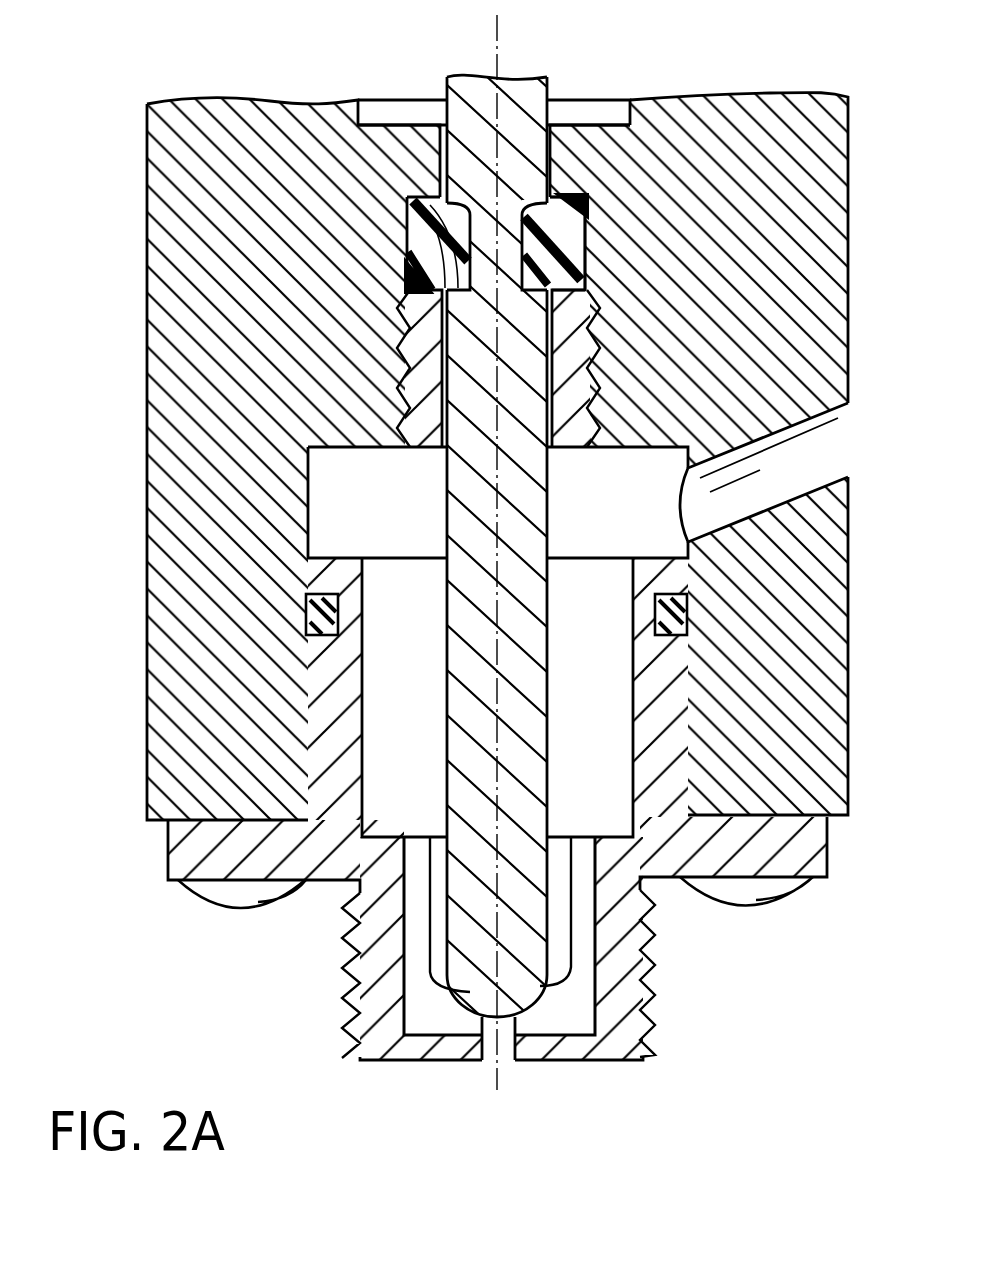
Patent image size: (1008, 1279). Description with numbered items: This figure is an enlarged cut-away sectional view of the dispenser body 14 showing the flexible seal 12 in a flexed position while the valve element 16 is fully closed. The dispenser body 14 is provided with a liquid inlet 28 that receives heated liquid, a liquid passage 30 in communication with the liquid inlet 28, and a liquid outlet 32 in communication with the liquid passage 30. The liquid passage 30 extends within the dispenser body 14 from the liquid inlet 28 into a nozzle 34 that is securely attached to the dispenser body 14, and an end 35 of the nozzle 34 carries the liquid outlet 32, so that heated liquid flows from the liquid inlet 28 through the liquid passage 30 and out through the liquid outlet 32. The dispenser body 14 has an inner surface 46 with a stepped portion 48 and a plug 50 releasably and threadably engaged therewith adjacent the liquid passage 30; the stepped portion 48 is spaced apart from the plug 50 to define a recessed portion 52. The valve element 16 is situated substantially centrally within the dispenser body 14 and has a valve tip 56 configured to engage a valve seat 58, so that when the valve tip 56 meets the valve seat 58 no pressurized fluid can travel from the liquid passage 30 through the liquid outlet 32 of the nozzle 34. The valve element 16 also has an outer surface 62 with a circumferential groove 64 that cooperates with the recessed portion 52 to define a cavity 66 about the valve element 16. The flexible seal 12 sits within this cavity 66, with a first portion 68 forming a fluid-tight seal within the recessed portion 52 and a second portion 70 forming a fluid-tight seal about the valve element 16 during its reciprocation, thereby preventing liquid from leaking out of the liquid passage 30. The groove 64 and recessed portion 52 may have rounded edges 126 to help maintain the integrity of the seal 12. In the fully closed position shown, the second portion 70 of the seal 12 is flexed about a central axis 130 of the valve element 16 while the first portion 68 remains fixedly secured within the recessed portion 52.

The flexible seal 12 is at (492, 217).
The dispenser body 14 is at (848, 205).
The valve element 16 is at (529, 542).
The liquid inlet 28 is at (790, 497).
The liquid passage 30 is at (392, 512).
The liquid outlet 32 is at (506, 1048).
The nozzle 34 is at (346, 947).
The end 35 is at (436, 1068).
The inner surface 46 is at (375, 108).
The stepped portion 48 is at (405, 145).
The plug 50 is at (537, 322).
The recessed portion 52 is at (594, 306).
The valve tip 56 is at (512, 990).
The valve seat 58 is at (436, 977).
The outer surface 62 is at (562, 160).
The circumferential groove 64 is at (582, 256).
The cavity 66 is at (580, 178).
The first portion 68 is at (405, 210).
The second portion 70 is at (471, 200).
The rounded edges 126 is at (422, 266).
The central axis 130 is at (505, 20).